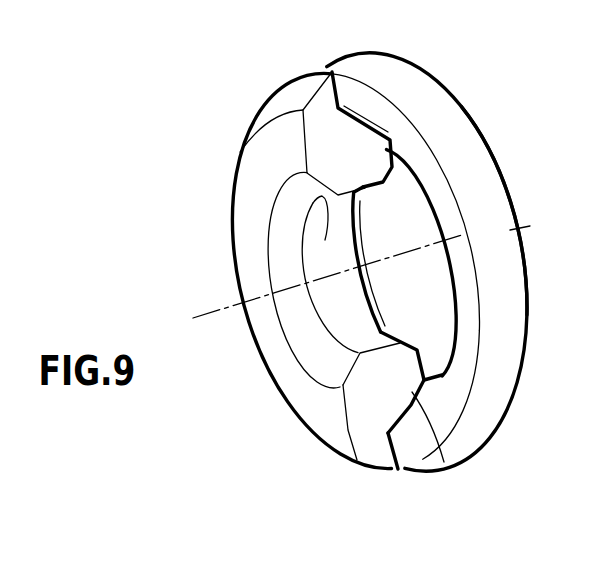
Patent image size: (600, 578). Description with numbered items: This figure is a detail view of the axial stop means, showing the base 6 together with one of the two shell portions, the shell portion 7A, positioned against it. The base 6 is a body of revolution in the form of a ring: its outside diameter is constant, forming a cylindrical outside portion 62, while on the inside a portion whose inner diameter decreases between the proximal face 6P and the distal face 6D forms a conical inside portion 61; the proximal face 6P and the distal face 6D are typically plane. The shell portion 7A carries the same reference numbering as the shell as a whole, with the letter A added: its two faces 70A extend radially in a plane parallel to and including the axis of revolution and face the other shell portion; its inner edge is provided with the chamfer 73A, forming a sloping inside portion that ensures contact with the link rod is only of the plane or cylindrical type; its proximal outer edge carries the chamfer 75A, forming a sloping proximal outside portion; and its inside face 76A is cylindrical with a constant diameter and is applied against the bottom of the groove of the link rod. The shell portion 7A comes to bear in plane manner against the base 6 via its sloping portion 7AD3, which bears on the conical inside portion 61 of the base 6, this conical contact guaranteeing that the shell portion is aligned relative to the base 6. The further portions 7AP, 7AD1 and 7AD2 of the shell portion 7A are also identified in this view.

The base 6 is at (456, 133).
The distal face 6D is at (512, 207).
The proximal face 6P is at (427, 173).
The conical inside portion 61 is at (437, 458).
The cylindrical outside portion 62 is at (397, 80).
The shell portion 7A is at (264, 148).
The outer peripheral portion of elastic member 7AP is at (290, 378).
The face 70A is at (350, 147).
The chamfer 73A is at (288, 258).
The chamfer 75A is at (288, 97).
The inside face 76A is at (282, 185).
The first protrusion 7AD1 is at (388, 450).
The second protrusion 7AD2 is at (425, 350).
The sloping portion 7AD3 is at (401, 462).